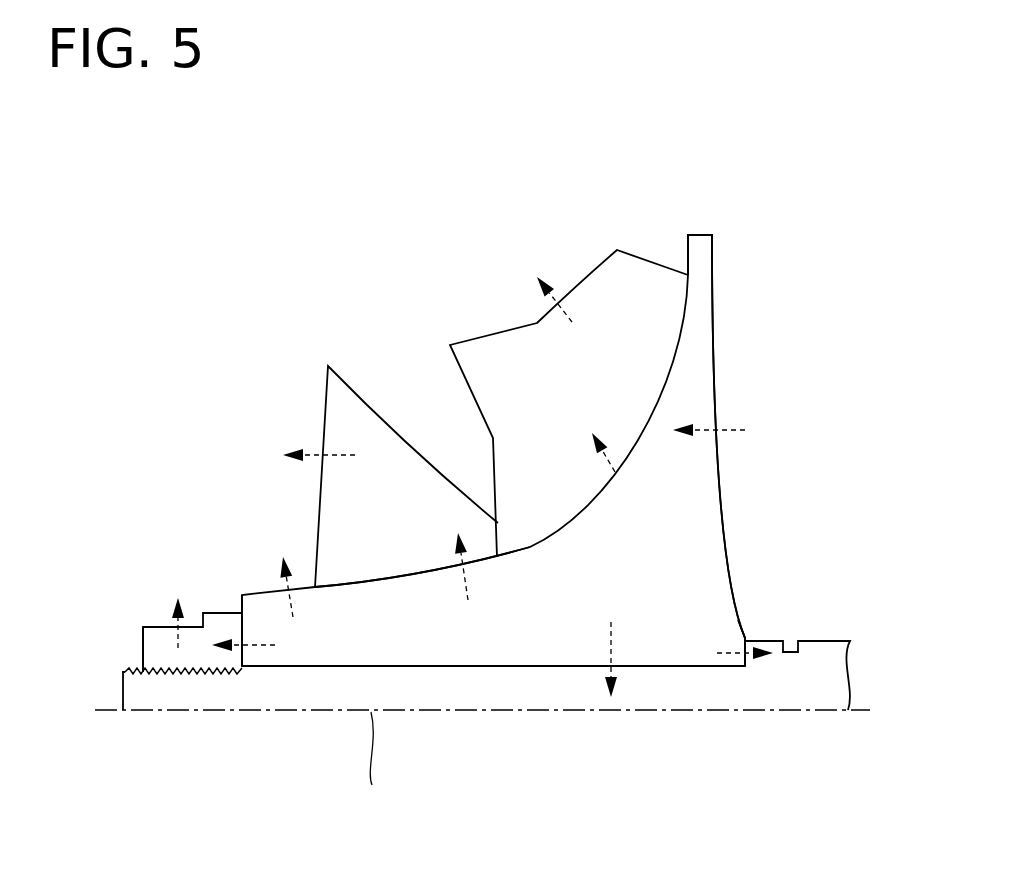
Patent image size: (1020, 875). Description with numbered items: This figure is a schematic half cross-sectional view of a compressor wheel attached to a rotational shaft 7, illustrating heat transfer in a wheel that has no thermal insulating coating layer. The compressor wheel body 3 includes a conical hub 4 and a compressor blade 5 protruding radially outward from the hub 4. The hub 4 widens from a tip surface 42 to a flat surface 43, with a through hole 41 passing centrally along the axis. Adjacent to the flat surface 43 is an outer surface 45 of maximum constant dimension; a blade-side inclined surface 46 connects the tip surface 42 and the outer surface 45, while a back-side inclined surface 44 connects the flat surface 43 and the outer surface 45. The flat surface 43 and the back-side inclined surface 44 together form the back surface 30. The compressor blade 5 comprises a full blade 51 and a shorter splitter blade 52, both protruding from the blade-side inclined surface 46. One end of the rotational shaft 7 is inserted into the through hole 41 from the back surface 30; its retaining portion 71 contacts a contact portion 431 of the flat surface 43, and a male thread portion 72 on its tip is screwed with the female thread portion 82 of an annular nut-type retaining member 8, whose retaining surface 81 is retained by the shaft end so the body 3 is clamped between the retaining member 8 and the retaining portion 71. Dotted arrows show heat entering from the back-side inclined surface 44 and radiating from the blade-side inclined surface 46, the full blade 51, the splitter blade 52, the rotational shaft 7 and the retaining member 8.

The compressor wheel body 3 is at (240, 212).
The hub 4 is at (679, 235).
The compressor blade 5 is at (337, 276).
The full blade 51 is at (363, 385).
The splitter blade 52 is at (488, 334).
The rotational shaft 7 is at (673, 690).
The retaining portion 71 is at (770, 633).
The male thread portion 72 is at (190, 675).
The retaining member 8 is at (205, 597).
The retaining surface 81 is at (243, 664).
The female thread portion 82 is at (158, 668).
The back surface 30 is at (820, 455).
The through hole 41 is at (500, 668).
The tip surface 42 is at (241, 598).
The flat surface 43 is at (747, 634).
The back-side inclined surface 44 is at (717, 477).
The outer surface 45 is at (696, 233).
The blade-side inclined surface 46 is at (348, 583).
The contact portion 431 is at (742, 666).